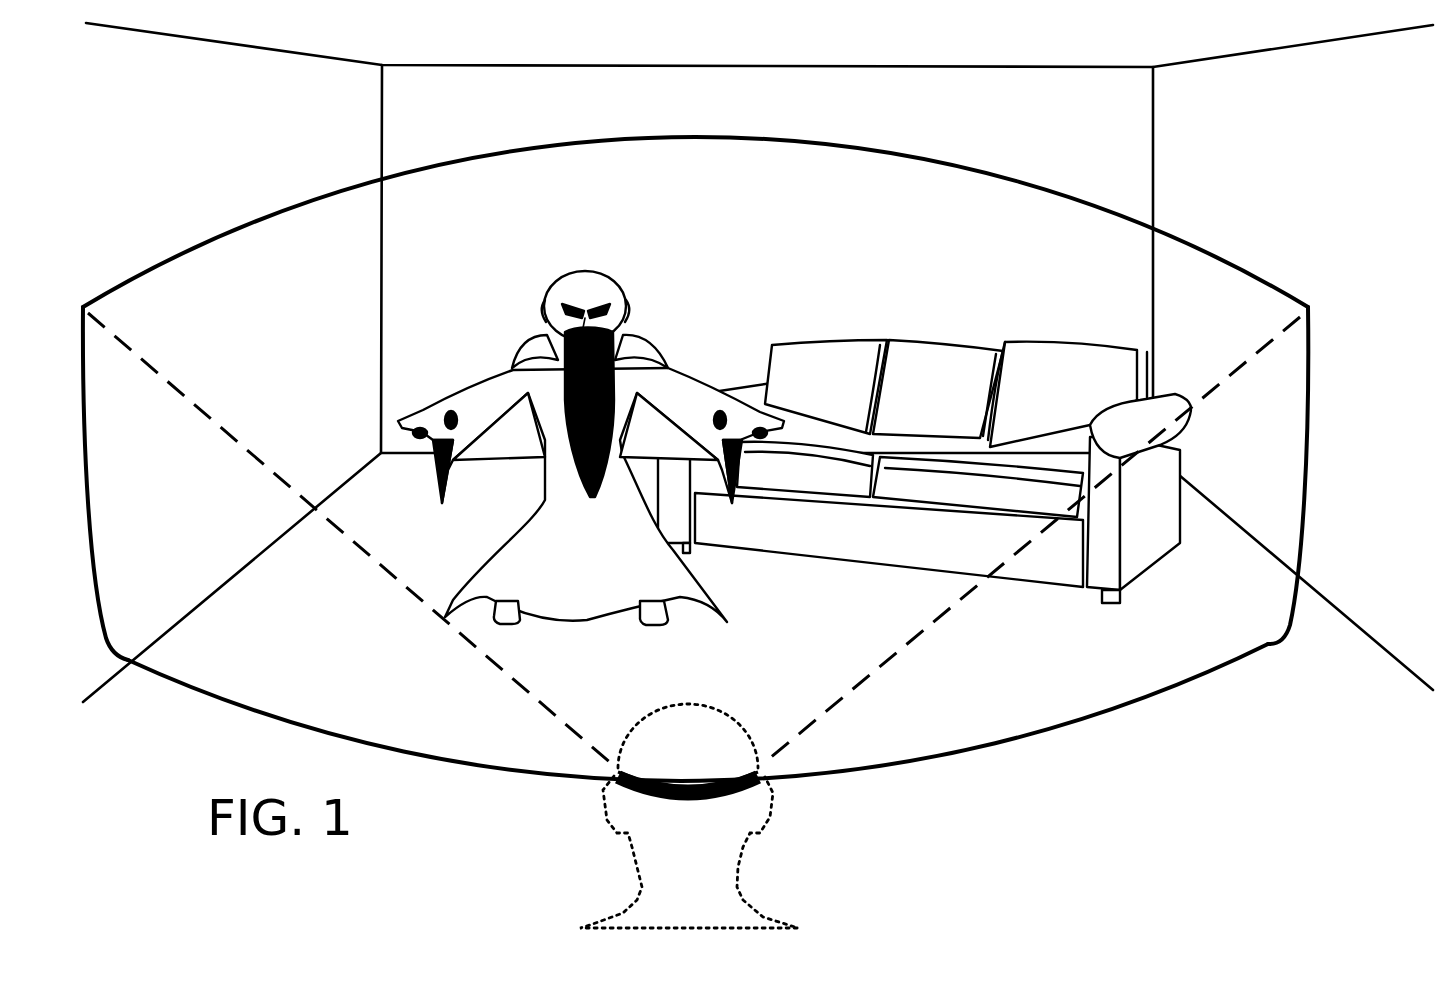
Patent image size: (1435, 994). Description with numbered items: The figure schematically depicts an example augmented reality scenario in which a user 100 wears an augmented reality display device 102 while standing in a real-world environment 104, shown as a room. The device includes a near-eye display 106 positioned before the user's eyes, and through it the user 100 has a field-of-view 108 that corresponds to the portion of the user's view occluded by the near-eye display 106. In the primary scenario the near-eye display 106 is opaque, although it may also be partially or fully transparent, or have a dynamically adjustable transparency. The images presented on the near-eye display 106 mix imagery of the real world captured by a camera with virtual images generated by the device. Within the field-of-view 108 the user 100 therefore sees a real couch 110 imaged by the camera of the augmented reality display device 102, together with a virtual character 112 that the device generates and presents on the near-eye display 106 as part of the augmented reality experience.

The user 100 is at (688, 765).
The augmented reality display device 102 is at (782, 800).
The real-world environment 104 is at (238, 98).
The near-eye display 106 is at (613, 768).
The field-of-view 108 is at (247, 224).
The real couch 110 is at (830, 342).
The virtual character 112 is at (577, 268).